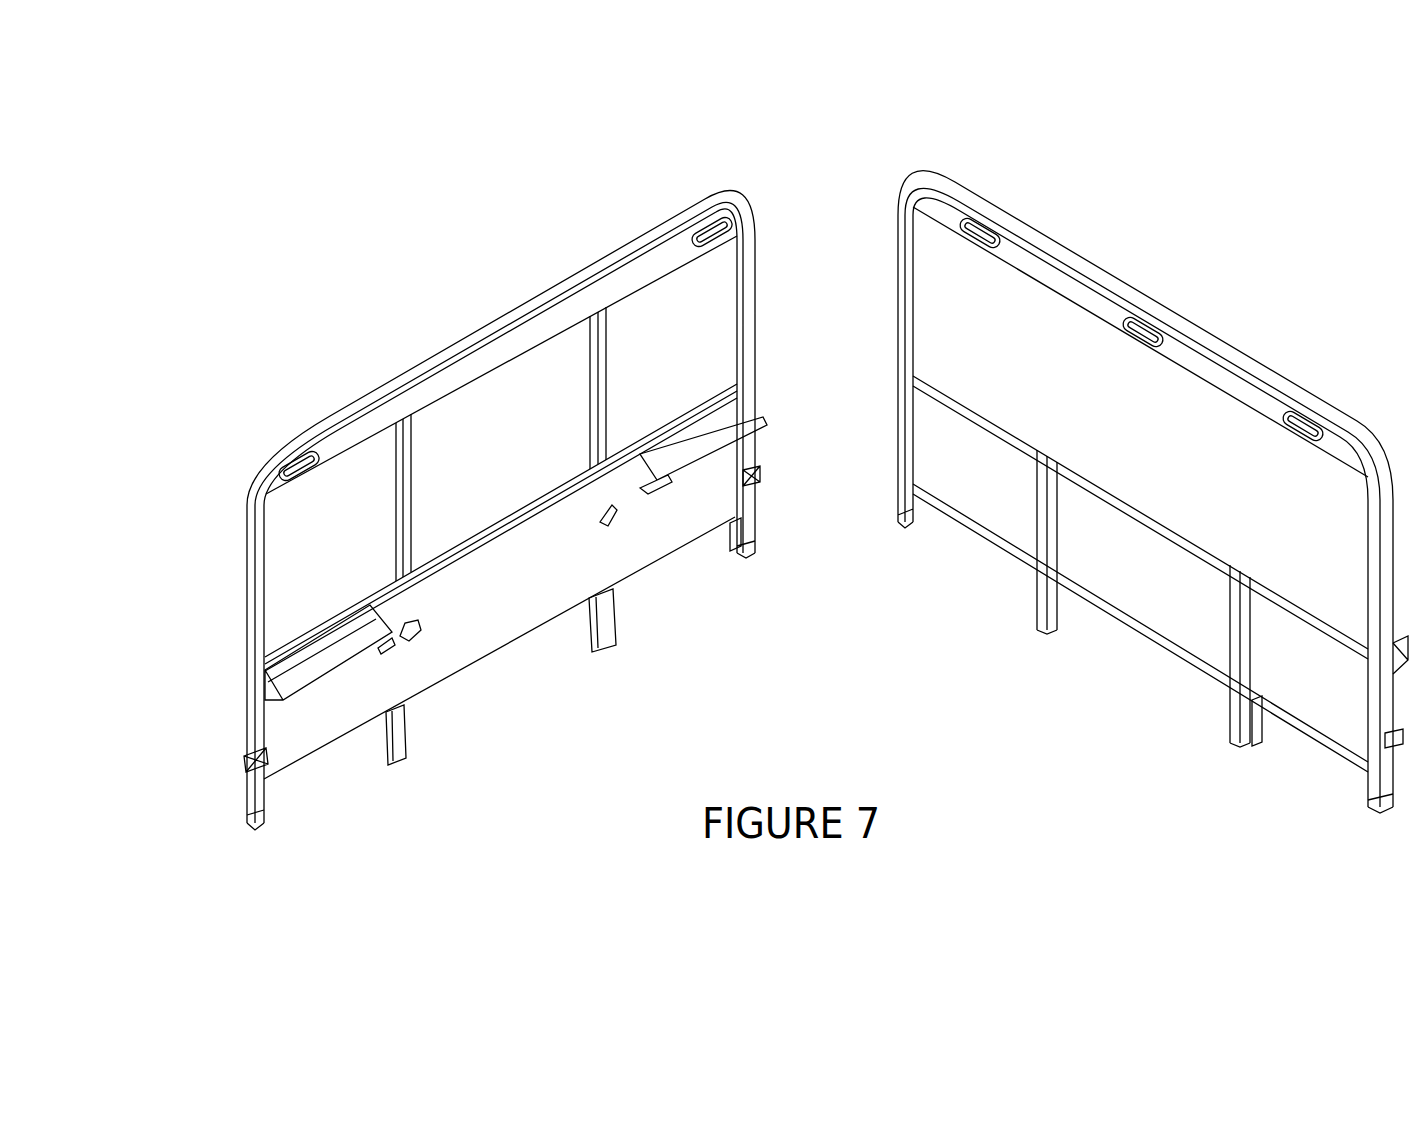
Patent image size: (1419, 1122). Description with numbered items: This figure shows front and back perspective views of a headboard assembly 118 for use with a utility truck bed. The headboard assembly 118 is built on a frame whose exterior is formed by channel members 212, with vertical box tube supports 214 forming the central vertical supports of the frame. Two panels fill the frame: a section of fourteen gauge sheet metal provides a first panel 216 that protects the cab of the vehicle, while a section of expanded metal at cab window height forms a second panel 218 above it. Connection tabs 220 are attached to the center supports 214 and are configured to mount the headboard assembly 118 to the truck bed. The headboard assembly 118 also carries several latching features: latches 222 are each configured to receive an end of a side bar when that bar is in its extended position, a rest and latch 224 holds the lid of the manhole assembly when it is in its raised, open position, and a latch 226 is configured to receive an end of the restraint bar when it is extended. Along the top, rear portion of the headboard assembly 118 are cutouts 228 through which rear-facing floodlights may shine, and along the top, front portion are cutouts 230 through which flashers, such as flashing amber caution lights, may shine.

The headboard assembly 118 is at (1276, 338).
The channel members 212 is at (897, 410).
The vertical box tube supports 214 is at (1052, 612).
The first panel 216 is at (475, 620).
The second panel 218 is at (546, 363).
The connection tabs 220 is at (1257, 718).
The latches 222 is at (246, 757).
The rest and latch 224 is at (359, 648).
The latch 226 is at (600, 523).
The cutouts 228 is at (707, 230).
The cutouts 230 is at (1156, 327).